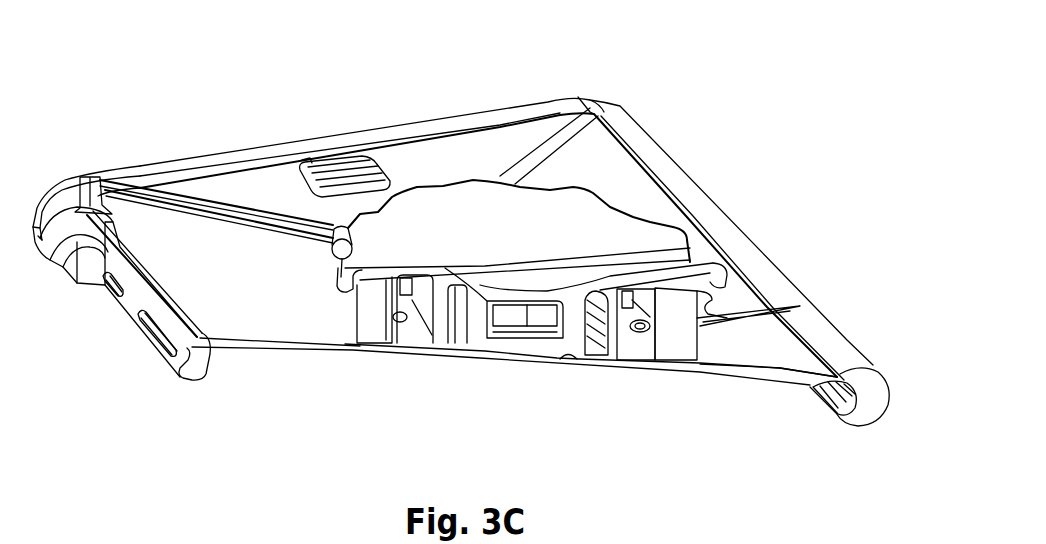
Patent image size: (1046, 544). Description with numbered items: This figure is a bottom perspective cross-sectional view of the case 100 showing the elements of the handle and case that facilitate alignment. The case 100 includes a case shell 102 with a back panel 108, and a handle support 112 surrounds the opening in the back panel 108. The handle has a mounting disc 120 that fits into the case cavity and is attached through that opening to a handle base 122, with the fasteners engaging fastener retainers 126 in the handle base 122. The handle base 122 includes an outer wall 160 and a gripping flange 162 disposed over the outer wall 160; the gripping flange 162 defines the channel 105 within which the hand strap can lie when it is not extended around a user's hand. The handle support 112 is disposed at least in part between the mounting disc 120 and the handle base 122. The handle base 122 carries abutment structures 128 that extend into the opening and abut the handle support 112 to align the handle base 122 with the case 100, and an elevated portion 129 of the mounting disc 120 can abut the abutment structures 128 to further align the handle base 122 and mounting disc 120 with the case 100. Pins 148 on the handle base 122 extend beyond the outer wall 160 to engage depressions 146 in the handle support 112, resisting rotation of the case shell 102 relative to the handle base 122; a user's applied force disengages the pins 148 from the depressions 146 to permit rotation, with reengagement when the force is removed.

The case 100 is at (75, 72).
The case shell 102 is at (703, 207).
The channel 105 is at (648, 266).
The back panel 108 is at (247, 243).
The handle support 112 is at (405, 345).
The mounting disc 120 is at (553, 357).
The handle base 122 is at (575, 218).
The fastener retainers 126 is at (477, 323).
The abutment structures 128 is at (437, 343).
The elevated portion 129 is at (582, 368).
The depressions 146 is at (645, 332).
The pins 148 is at (385, 325).
The outer wall 160 is at (362, 320).
The gripping flange 162 is at (448, 218).